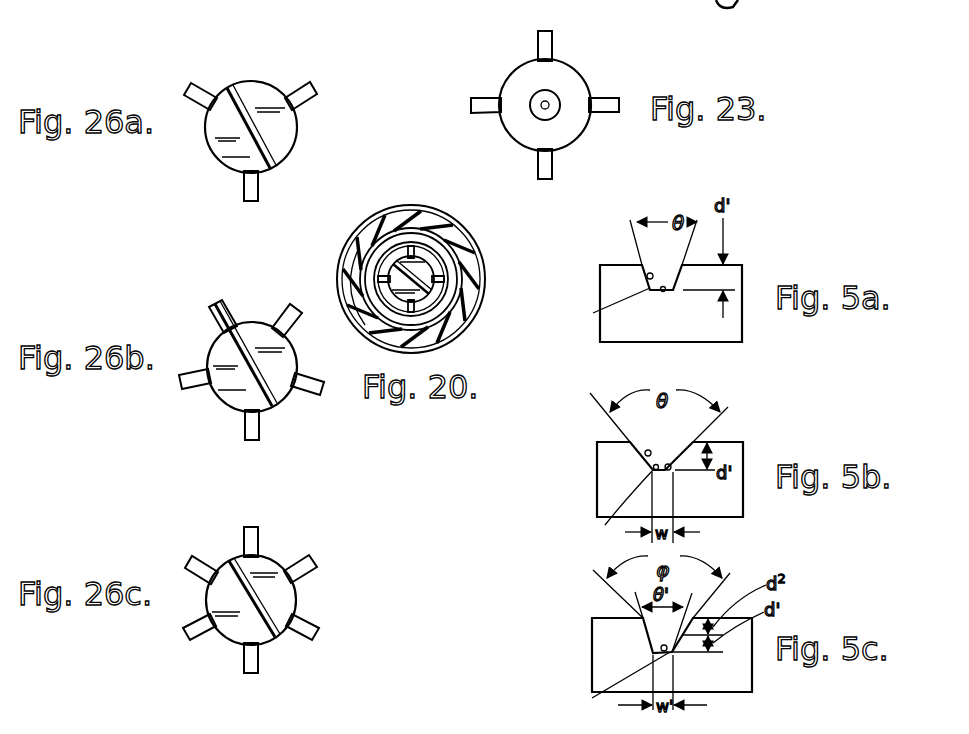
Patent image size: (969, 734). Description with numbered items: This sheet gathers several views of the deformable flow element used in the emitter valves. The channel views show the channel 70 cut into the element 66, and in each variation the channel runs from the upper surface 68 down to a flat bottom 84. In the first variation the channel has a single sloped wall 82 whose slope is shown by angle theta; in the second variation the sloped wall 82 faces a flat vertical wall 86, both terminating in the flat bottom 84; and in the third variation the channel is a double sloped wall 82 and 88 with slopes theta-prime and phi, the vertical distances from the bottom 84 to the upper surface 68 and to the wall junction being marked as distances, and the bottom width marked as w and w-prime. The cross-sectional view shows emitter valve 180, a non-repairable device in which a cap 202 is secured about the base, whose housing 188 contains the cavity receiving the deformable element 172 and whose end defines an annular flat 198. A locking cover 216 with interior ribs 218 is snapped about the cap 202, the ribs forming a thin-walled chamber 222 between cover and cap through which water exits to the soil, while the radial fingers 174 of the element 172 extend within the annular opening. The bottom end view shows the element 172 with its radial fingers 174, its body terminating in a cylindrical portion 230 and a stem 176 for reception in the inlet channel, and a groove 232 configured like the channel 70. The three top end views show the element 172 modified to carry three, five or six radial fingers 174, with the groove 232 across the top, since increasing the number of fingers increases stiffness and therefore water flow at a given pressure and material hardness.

In FIG. 5A, the element 66 is at (598, 297).
In FIG. 5B, the element 66 is at (596, 483).
In FIG. 5C, the element 66 is at (589, 680).
In FIG. 5A, the upper surface 68 is at (735, 265).
In FIG. 5B, the upper surface 68 is at (728, 442).
In FIG. 5C, the upper surface 68 is at (733, 617).
In FIG. 5A, the channel 70 is at (645, 263).
In FIG. 5B, the channel 70 is at (638, 441).
In FIG. 5C, the channel 70 is at (643, 619).
In FIG. 5A, the sloped wall 82 is at (605, 306).
In FIG. 5B, the sloped wall 82 is at (650, 458).
In FIG. 5C, the sloped wall 82 is at (648, 632).
In FIG. 5A, the flat bottom 84 is at (661, 292).
In FIG. 5B, the flat bottom 84 is at (621, 511).
In FIG. 5C, the flat bottom 84 is at (614, 683).
In FIG. 5B, the flat vertical wall 86 is at (667, 472).
In FIG. 5C, the sloped wall 88 is at (656, 643).
In FIG. 26A, the deformable element 172 is at (275, 79).
In FIG. 26B, the deformable element 172 is at (215, 404).
In FIG. 26C, the deformable element 172 is at (278, 552).
In FIG. 23, the deformable element 172 is at (594, 82).
In FIG. 20, the deformable element 172 is at (419, 258).
In FIG. 26A, the radial fingers 174 is at (198, 97).
In FIG. 26B, the radial fingers 174 is at (302, 395).
In FIG. 26C, the radial fingers 174 is at (303, 573).
In FIG. 23, the radial fingers 174 is at (482, 100).
In FIG. 20, the radial fingers 174 is at (447, 318).
In FIG. 23, the stem 176 is at (545, 105).
In FIG. 20, the emitter valve 180 is at (376, 207).
In FIG. 20, the housing 188 is at (455, 247).
In FIG. 20, the annular flat 198 is at (372, 265).
In FIG. 20, the cap 202 is at (458, 289).
In FIG. 20, the locking cover 216 is at (362, 232).
In FIG. 20, the interior ribs 218 is at (468, 266).
In FIG. 20, the thin-walled chamber 222 is at (480, 300).
In FIG. 23, the cylindrical portion 230 is at (545, 105).
In FIG. 26A, the groove 232 is at (262, 149).
In FIG. 26B, the groove 232 is at (240, 329).
In FIG. 26C, the groove 232 is at (232, 567).